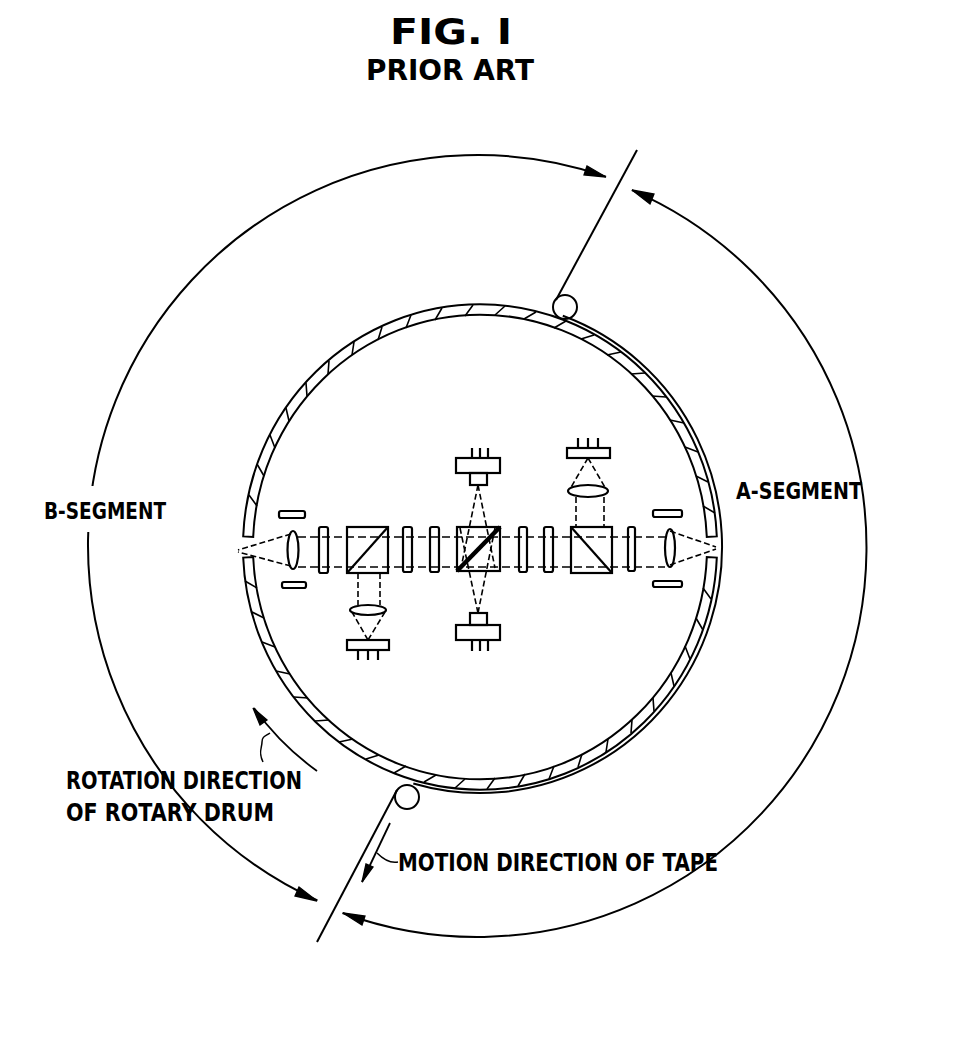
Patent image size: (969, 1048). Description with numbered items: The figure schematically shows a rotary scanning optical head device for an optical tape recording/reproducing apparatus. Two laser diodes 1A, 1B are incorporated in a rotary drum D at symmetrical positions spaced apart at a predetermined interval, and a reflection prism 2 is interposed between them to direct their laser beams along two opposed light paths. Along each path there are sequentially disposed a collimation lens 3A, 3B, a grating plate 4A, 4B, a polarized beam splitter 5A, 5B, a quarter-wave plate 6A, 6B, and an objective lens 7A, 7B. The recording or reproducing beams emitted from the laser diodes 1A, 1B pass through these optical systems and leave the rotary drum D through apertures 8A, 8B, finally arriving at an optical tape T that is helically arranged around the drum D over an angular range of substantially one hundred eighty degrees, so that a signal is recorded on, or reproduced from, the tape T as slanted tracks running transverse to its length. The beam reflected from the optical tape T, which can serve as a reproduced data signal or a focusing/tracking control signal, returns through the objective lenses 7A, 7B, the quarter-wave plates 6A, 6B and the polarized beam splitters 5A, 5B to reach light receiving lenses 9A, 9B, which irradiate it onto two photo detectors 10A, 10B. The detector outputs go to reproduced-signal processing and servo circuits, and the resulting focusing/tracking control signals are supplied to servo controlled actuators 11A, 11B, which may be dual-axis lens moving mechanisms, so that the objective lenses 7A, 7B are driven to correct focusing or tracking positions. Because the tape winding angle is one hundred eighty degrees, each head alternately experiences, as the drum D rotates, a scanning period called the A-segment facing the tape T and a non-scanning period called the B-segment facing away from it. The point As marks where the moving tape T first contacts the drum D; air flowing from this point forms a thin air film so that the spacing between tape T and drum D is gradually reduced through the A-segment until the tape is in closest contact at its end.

The laser diode 1A is at (492, 652).
The laser diode 1B is at (494, 456).
The reflection prism 2 is at (497, 528).
The collimation lens 3A is at (523, 573).
The collimation lens 3B is at (433, 527).
The grating plate 4A is at (548, 573).
The grating plate 4B is at (407, 527).
The polarized beam splitter 5A is at (598, 573).
The polarized beam splitter 5B is at (371, 526).
The quarter-wave plate 6A is at (632, 573).
The quarter-wave plate 6B is at (324, 527).
The objective lens 7A is at (673, 567).
The objective lens 7B is at (292, 569).
The aperture 8A is at (715, 548).
The aperture 8B is at (241, 549).
The light receiving lens 9A is at (570, 490).
The light receiving lens 9B is at (386, 612).
The photo detector 10A is at (574, 438).
The photo detector 10B is at (382, 651).
The servo controlled actuator 11A is at (666, 509).
The servo controlled actuator 11B is at (292, 510).
The rotary drum D is at (292, 403).
The optical tape T is at (598, 228).
The initial contact point As is at (552, 312).